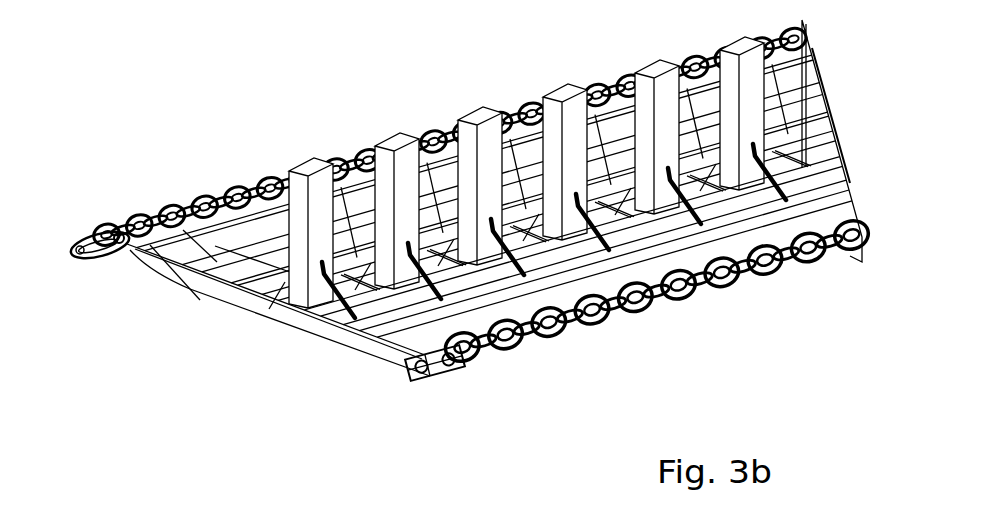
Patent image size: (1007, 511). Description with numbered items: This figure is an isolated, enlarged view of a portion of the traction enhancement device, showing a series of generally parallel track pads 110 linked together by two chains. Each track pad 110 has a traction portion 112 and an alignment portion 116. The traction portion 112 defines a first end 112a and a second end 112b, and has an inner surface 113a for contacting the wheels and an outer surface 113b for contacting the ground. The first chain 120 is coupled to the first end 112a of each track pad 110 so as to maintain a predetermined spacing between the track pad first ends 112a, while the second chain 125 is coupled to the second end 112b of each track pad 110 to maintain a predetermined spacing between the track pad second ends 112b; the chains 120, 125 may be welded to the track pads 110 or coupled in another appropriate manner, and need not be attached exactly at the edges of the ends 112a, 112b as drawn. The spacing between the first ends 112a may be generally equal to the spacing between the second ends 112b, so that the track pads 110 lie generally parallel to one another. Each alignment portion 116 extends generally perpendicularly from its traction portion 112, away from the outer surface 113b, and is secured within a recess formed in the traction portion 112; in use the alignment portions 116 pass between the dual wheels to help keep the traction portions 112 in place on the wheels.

The track pad 110 is at (347, 357).
The traction portion 112 is at (237, 300).
The first end 112a is at (455, 380).
The second end 112b is at (257, 220).
The inner surface 113a is at (150, 210).
The outer surface 113b is at (283, 313).
The alignment portion 116 is at (387, 160).
The first chain 120 is at (665, 317).
The second chain 125 is at (423, 123).